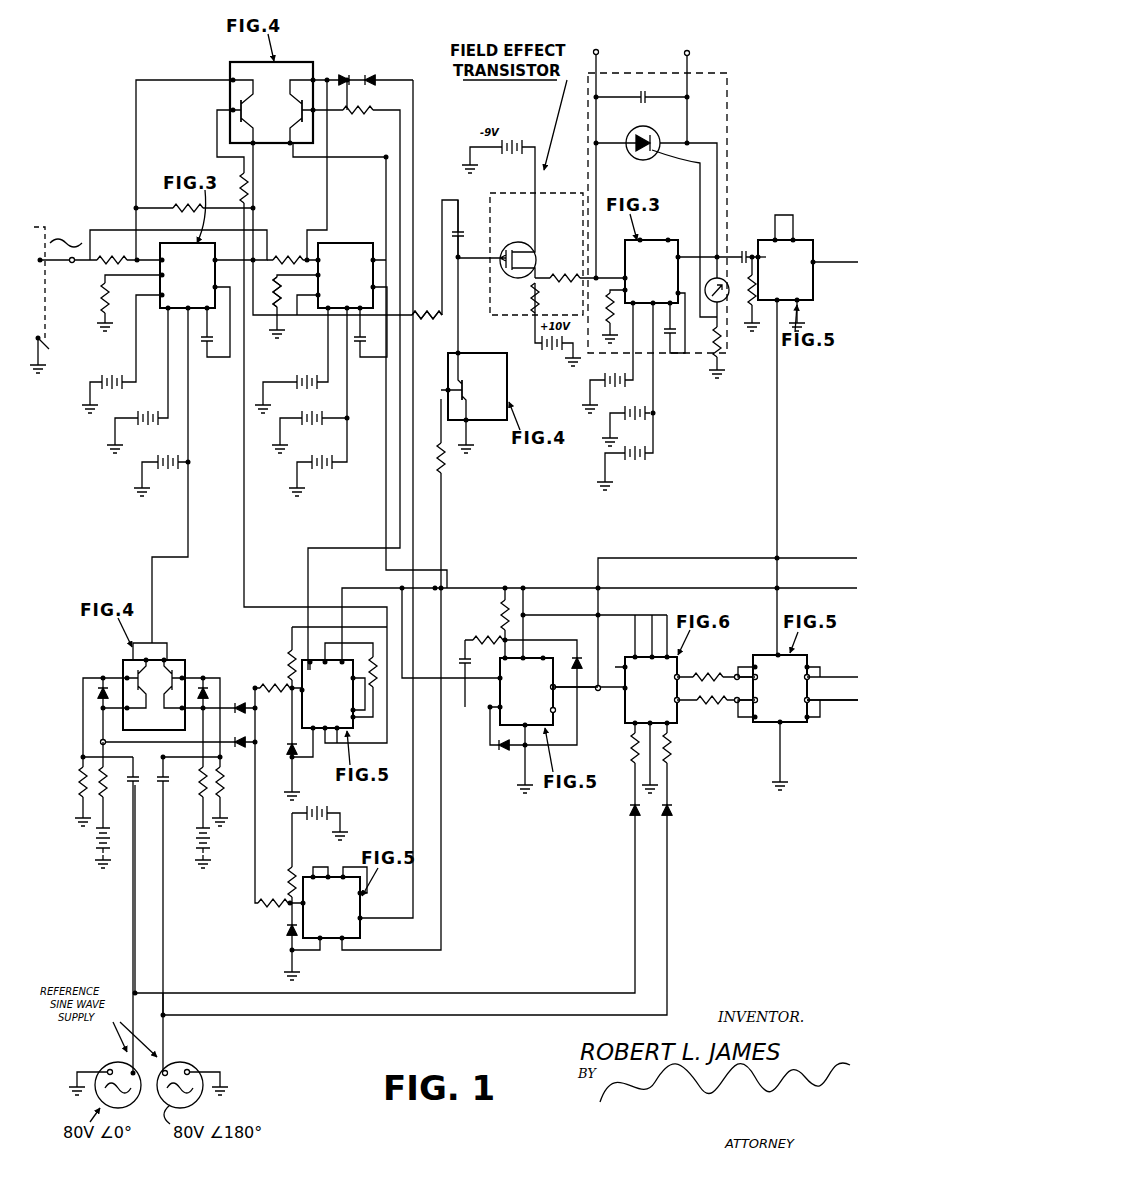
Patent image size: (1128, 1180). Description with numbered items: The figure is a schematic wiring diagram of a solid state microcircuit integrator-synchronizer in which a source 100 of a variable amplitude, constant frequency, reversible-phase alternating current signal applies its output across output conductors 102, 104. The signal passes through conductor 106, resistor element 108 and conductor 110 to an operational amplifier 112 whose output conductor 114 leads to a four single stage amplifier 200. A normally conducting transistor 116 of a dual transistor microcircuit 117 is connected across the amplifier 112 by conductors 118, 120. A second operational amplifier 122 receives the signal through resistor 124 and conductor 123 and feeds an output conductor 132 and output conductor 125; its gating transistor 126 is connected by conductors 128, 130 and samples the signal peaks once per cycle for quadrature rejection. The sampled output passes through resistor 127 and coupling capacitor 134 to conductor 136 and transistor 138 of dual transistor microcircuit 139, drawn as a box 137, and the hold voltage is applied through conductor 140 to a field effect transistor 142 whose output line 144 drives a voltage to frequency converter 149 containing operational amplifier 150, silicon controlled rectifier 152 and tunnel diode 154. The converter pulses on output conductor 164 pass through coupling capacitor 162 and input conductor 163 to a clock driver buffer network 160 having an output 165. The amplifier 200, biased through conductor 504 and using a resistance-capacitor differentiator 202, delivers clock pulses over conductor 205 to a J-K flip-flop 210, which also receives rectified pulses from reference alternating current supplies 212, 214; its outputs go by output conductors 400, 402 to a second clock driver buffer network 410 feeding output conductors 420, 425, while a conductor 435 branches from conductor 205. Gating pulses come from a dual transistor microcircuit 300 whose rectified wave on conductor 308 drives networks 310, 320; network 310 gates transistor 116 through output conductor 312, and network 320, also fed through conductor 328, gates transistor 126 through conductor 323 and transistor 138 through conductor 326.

The source of variable amplitude alternating current signal 100 is at (33, 227).
The output conductor 102 is at (104, 290).
The output conductor 104 is at (46, 347).
The conductor 106 is at (113, 228).
The resistor element 108 is at (288, 231).
The conductor 110 is at (318, 255).
The operational amplifier 112 is at (364, 241).
The output conductor 114 is at (480, 574).
The transistor 116 is at (288, 112).
The dual transistor microcircuit 117 is at (308, 58).
The conductor 118 is at (387, 178).
The conductor 120 is at (322, 194).
The second operational amplifier 122 is at (183, 235).
The conductor 123 is at (147, 258).
The resistor 124 is at (112, 258).
The output conductor 125 is at (307, 320).
The transistor 126 is at (253, 120).
The resistor 127 is at (429, 319).
The conductor 128 is at (252, 181).
The conductor 130 is at (143, 150).
The output conductor 132 is at (230, 258).
The coupling capacitor 134 is at (460, 226).
The conductor 136 is at (466, 306).
The transistor module 137 is at (509, 387).
The transistor 138 is at (467, 390).
The dual transistor microcircuit 139 is at (100, 312).
The conductor 140 is at (478, 256).
The field effect transistor 142 is at (545, 238).
The field effect transistor output line 144 is at (575, 273).
The voltage to frequency converter 149 is at (735, 103).
The operational amplifier 150 is at (660, 239).
The silicon controlled rectifier 152 is at (634, 132).
The tunnel diode 154 is at (710, 320).
The clock driver buffer network 160 is at (807, 238).
The coupling capacitor 162 is at (773, 238).
The input conductor 163 is at (764, 268).
The output conductor 164 is at (738, 254).
The output terminal 165 is at (818, 260).
The four single stage amplifier 200 is at (548, 657).
The resistance-capacitor differentiator 202 is at (484, 640).
The conductor 205 is at (588, 690).
The J-K flip-flop 210 is at (678, 715).
The reference alternating current supply 212 is at (120, 1062).
The reference alternating current supply 214 is at (186, 1062).
The dual transistor microcircuit 300 is at (190, 652).
The conductor 308 is at (252, 868).
The four signal stage amplifier microcircuit 310 is at (362, 930).
The output conductor 312 is at (400, 80).
The network 320 is at (356, 660).
The conductor 323 is at (248, 558).
The conductor 326 is at (318, 550).
The conductor 328 is at (291, 630).
The output conductor 400 is at (690, 676).
The output conductor 402 is at (690, 704).
The second clock driver buffer network 410 is at (768, 726).
The output conductor 420 is at (850, 676).
The output conductor 425 is at (830, 705).
The conductor 435 is at (693, 556).
The conductor 504 is at (727, 587).